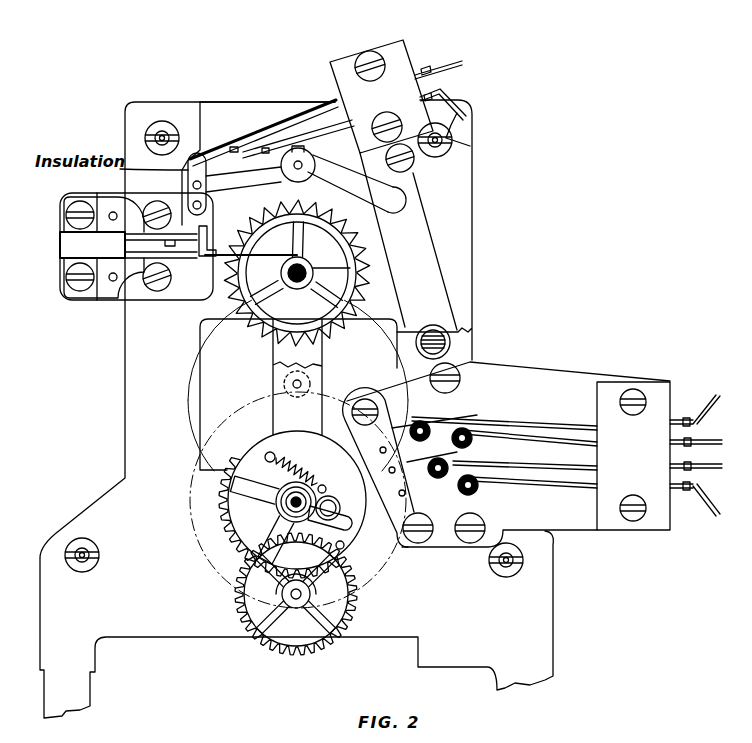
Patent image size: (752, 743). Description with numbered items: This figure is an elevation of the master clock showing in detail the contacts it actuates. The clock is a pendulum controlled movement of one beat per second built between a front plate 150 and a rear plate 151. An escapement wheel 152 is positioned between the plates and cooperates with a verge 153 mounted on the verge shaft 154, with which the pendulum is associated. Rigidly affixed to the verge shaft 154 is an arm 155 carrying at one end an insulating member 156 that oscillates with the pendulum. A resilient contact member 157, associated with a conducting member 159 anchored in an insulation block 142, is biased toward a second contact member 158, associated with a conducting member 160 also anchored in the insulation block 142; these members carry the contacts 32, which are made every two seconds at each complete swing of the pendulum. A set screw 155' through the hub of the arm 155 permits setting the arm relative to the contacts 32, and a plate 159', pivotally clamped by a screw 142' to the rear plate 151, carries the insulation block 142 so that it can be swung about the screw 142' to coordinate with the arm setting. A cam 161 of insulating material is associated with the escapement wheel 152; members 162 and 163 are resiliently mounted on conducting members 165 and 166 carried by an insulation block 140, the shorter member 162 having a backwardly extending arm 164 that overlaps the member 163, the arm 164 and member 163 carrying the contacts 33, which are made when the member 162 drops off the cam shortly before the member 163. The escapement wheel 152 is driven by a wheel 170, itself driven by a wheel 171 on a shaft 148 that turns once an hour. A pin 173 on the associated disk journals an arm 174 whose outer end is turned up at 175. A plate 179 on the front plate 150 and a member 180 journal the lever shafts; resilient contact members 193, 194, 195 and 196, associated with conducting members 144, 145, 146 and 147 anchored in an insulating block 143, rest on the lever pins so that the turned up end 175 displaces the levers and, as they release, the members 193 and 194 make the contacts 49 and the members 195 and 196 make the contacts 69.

The contacts 32 is at (232, 145).
The contacts 33 is at (216, 252).
The contacts 49 is at (460, 421).
The contacts 69 is at (476, 466).
The insulation block 140 is at (62, 244).
The insulation block 142 is at (381, 86).
The screw 142' is at (415, 220).
The insulating block 143 is at (676, 395).
The conducting member 144 is at (695, 410).
The conducting member 145 is at (722, 450).
The conducting member 146 is at (722, 474).
The conducting member 147 is at (716, 506).
The shaft 148 is at (276, 505).
The front plate 150 is at (556, 590).
The rear plate 151 is at (258, 100).
The escapement wheel 152 is at (256, 326).
The verge 153 is at (320, 177).
The verge shaft 154 is at (300, 162).
The arm 155 is at (397, 213).
The set screw 155' is at (249, 157).
The insulating member 156 is at (190, 175).
The resilient contact member 157 is at (200, 150).
The second contact member 158 is at (300, 133).
The conducting member 159 is at (457, 60).
The plate 159' is at (439, 251).
The conducting member 160 is at (467, 90).
The cam 161 is at (290, 277).
The member 162 is at (290, 253).
The member 163 is at (306, 253).
The arm 164 is at (204, 230).
The conducting member 165 is at (67, 218).
The conducting member 166 is at (67, 277).
The wheel 170 is at (207, 345).
The wheel 171 is at (192, 530).
The pin 173 is at (330, 493).
The arm 174 is at (333, 532).
The turned up end 175 is at (339, 508).
The plate 179 is at (540, 366).
The member 180 is at (396, 420).
The resilient contact member 193 is at (465, 418).
The resilient contact member 194 is at (497, 424).
The resilient contact member 195 is at (525, 481).
The resilient contact member 196 is at (492, 478).